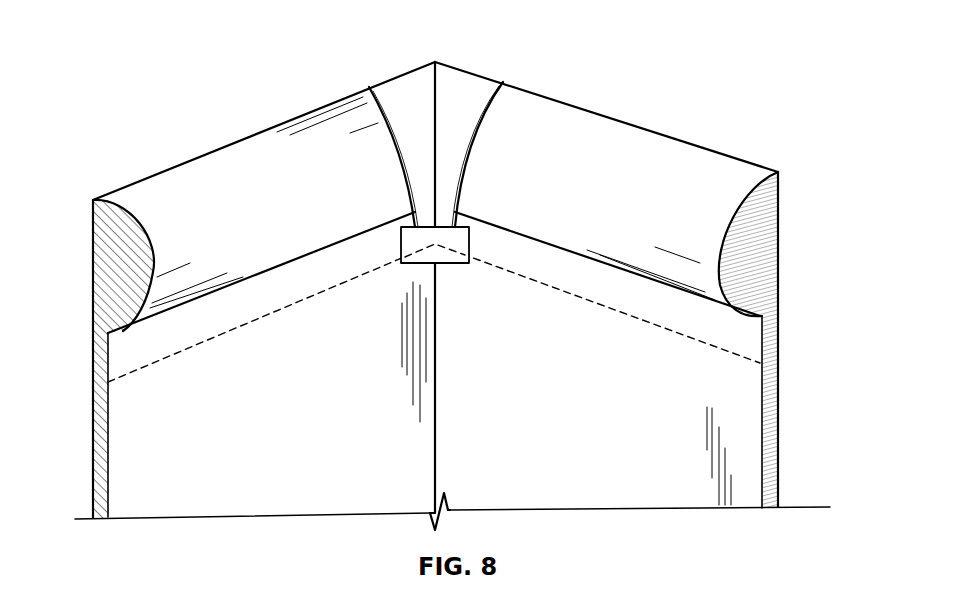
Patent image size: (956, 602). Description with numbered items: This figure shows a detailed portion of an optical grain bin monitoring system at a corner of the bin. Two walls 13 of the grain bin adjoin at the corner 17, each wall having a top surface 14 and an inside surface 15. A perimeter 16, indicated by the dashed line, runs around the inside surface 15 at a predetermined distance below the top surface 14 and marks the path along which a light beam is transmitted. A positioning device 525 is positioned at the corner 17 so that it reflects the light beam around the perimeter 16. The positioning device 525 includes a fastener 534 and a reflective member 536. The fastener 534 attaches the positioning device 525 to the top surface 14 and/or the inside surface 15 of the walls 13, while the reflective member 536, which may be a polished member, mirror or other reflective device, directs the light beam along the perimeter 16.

The walls 13 is at (93, 415).
The top surface 14 is at (582, 106).
The inside surface 15 is at (121, 440).
The perimeter 16 is at (643, 324).
The corner 17 is at (436, 61).
The positioning device 525 is at (390, 156).
The fastener 534 is at (499, 95).
The reflective member 536 is at (447, 264).